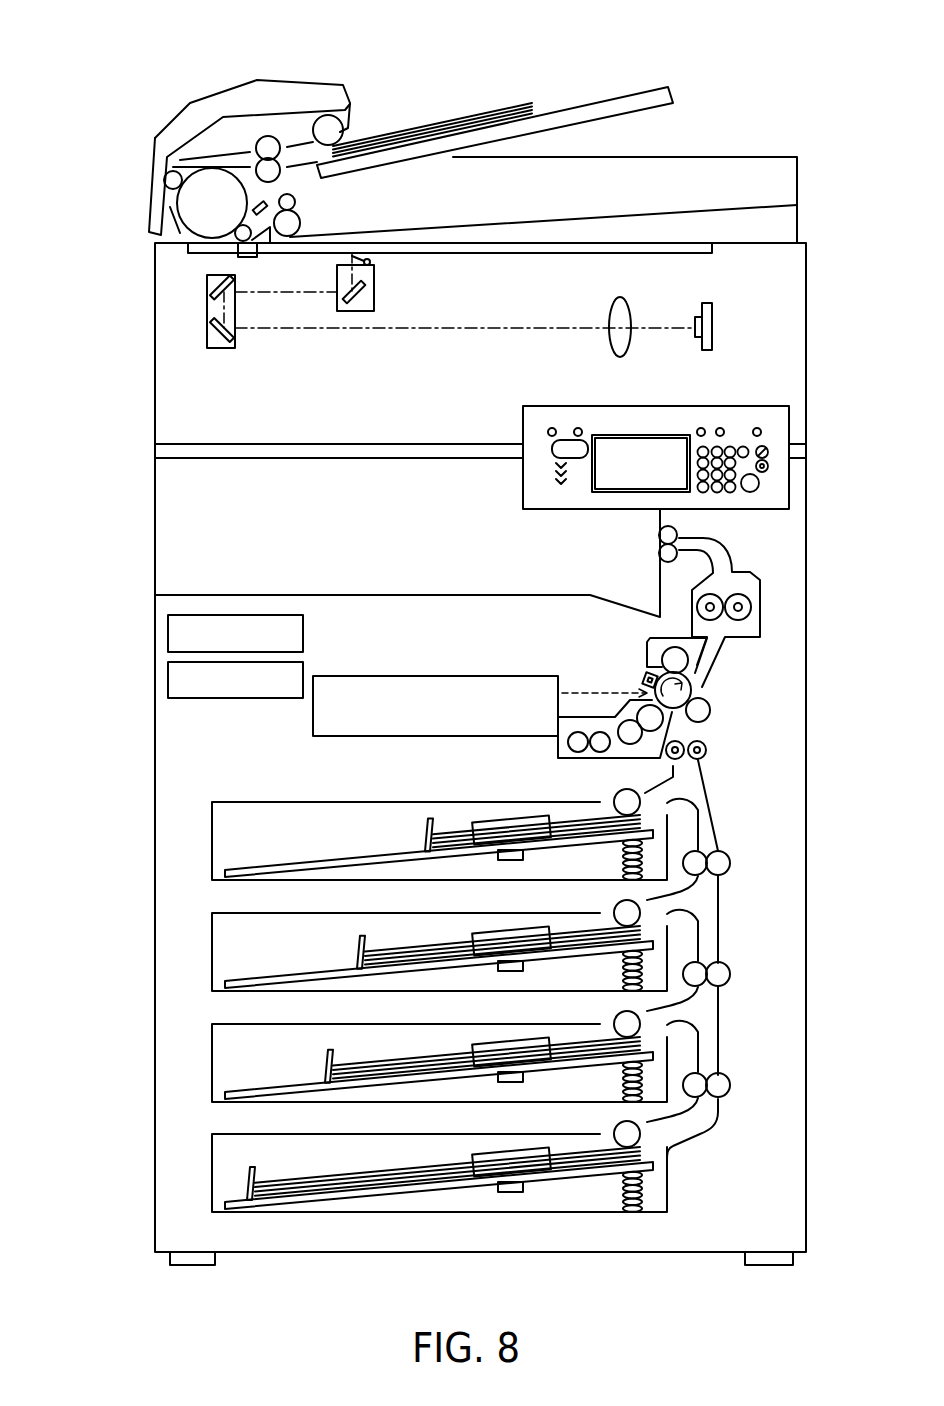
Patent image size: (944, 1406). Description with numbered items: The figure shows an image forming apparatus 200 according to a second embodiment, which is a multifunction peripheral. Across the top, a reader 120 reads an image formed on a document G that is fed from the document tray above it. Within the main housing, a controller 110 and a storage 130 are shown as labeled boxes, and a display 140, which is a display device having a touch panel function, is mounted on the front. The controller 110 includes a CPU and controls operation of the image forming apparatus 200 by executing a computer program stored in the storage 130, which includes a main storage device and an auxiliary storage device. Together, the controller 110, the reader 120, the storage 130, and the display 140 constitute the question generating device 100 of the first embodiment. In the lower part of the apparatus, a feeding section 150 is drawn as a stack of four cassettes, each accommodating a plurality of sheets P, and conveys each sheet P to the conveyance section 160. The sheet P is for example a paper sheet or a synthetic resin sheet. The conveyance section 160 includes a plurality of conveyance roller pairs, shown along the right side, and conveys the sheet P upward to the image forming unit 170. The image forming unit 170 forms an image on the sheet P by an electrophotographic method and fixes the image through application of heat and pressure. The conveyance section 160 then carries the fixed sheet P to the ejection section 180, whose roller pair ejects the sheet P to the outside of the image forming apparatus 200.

The question generating device 100 is at (126, 689).
The image forming apparatus 200 is at (473, 121).
The document G is at (447, 120).
The reader 120 is at (318, 372).
The display 140 is at (606, 435).
The ejection section 180 is at (649, 547).
The controller 110 is at (305, 633).
The storage 130 is at (305, 673).
The image forming unit 170 is at (738, 704).
The conveyance section 160 is at (714, 1151).
The feeding section 150 is at (190, 788).
The sheet P is at (446, 831).